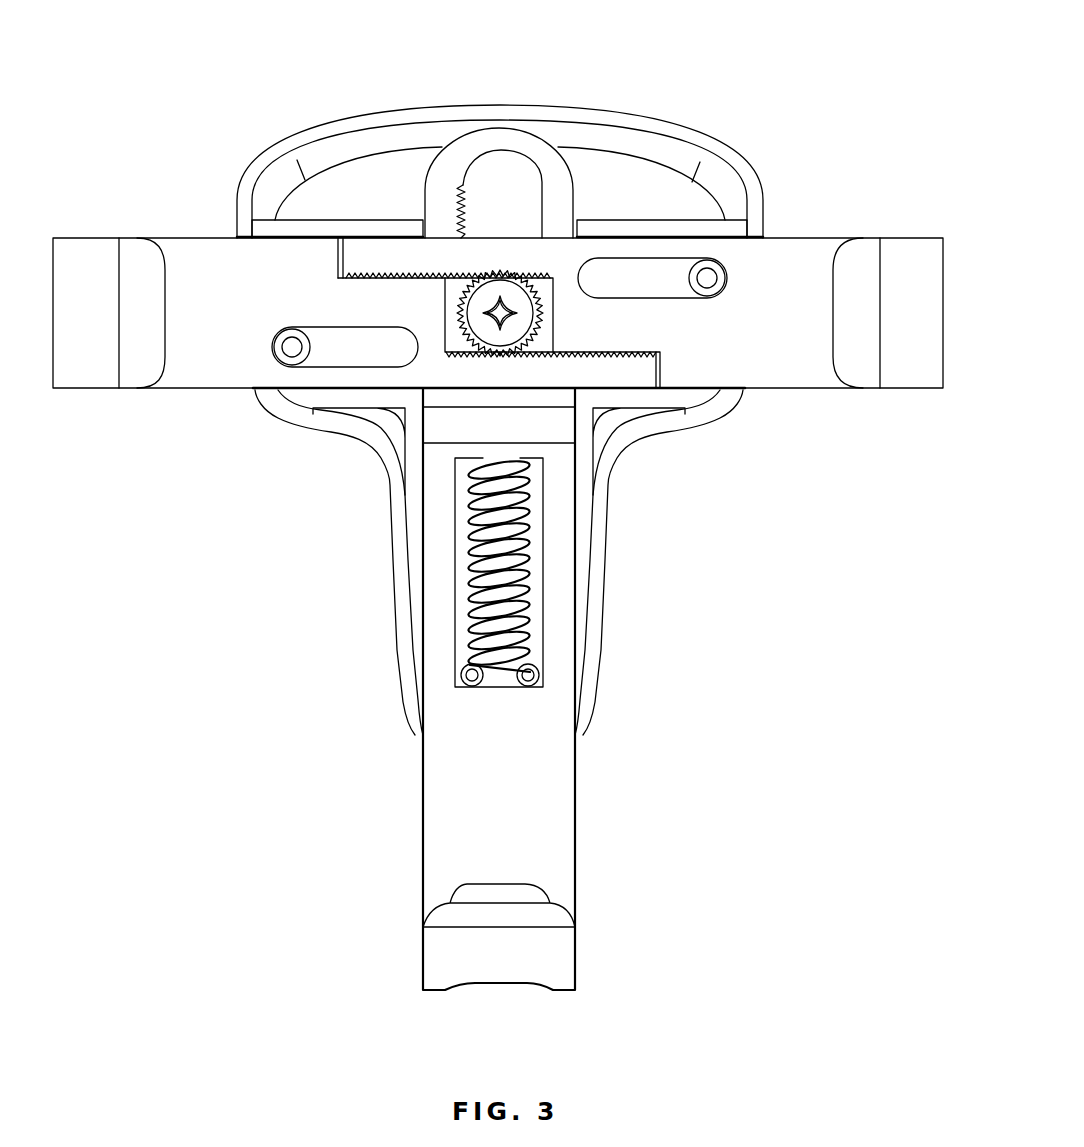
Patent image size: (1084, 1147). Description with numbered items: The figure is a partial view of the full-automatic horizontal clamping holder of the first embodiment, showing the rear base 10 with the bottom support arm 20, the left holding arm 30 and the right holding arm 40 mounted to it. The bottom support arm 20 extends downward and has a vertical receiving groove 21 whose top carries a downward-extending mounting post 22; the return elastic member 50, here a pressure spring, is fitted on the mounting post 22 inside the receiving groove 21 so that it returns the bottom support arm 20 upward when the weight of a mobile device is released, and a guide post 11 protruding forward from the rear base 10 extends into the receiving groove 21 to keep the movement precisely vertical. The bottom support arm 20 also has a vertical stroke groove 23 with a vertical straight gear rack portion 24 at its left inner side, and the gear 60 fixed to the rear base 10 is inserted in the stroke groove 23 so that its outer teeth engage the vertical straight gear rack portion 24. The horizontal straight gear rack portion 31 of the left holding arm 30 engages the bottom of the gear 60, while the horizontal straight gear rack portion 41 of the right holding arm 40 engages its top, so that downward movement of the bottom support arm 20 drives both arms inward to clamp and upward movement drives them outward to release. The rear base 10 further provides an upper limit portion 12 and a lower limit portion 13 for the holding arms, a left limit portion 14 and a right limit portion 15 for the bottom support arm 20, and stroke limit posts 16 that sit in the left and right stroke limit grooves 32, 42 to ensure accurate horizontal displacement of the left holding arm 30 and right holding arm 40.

The rear base 10 is at (327, 148).
The guide post 11 is at (543, 680).
The upper limit portion 12 is at (318, 227).
The lower limit portion 13 is at (375, 395).
The left limit portion 14 is at (413, 445).
The right limit portion 15 is at (583, 460).
The stroke limit posts 16 is at (712, 270).
The bottom support arm 20 is at (540, 765).
The receiving groove 21 is at (533, 520).
The mounting post 22 is at (527, 573).
The stroke groove 23 is at (503, 212).
The vertical straight gear rack portion 24 is at (470, 190).
The left holding arm 30 is at (217, 368).
The horizontal straight gear rack portion 31 is at (600, 360).
The left stroke limit groove 32 is at (331, 357).
The right holding arm 40 is at (790, 260).
The horizontal straight gear rack portion 41 is at (415, 272).
The right stroke limit groove 42 is at (648, 273).
The return elastic member 50 is at (527, 608).
The gear 60 is at (512, 292).